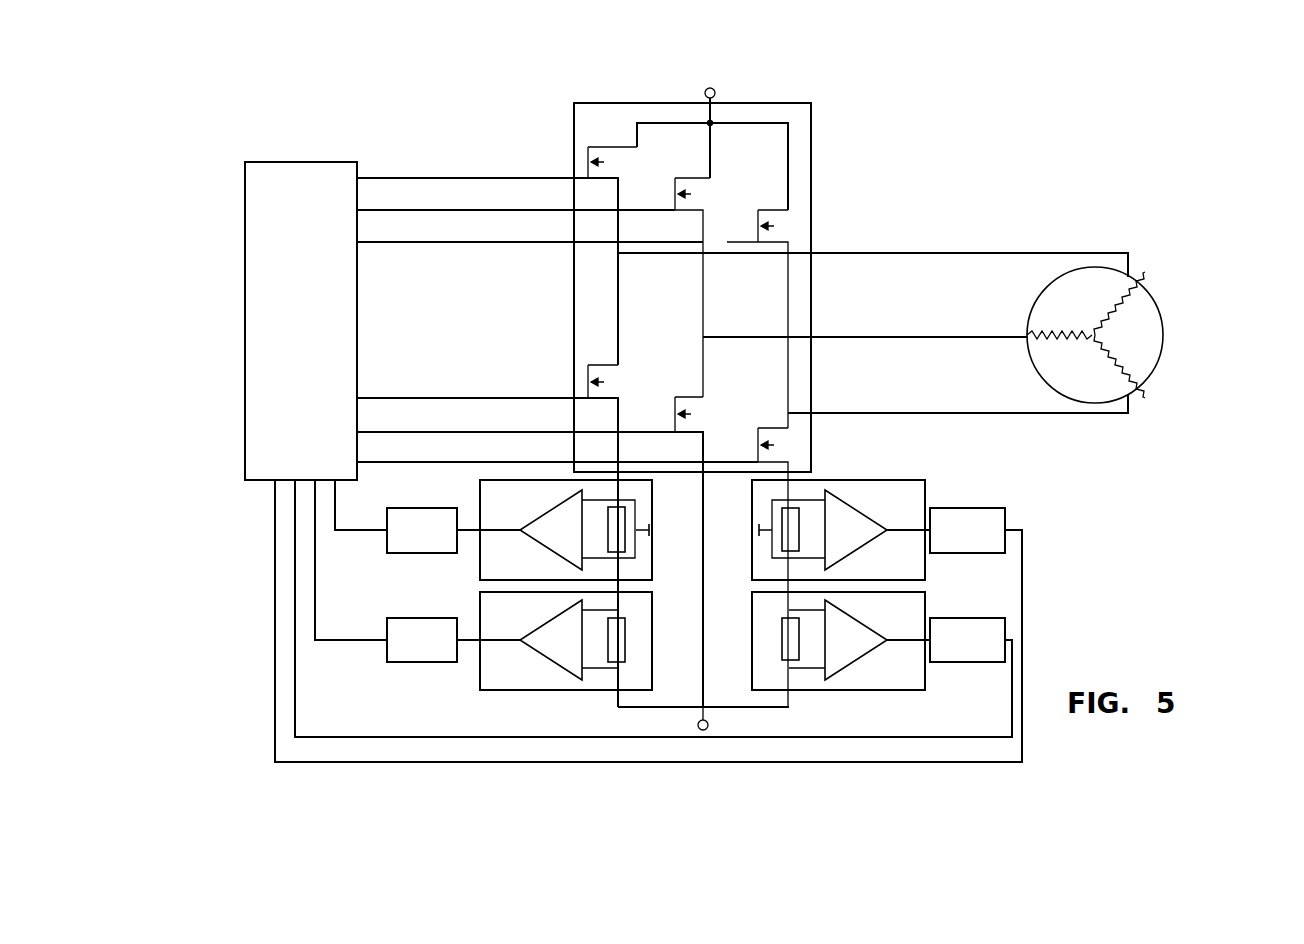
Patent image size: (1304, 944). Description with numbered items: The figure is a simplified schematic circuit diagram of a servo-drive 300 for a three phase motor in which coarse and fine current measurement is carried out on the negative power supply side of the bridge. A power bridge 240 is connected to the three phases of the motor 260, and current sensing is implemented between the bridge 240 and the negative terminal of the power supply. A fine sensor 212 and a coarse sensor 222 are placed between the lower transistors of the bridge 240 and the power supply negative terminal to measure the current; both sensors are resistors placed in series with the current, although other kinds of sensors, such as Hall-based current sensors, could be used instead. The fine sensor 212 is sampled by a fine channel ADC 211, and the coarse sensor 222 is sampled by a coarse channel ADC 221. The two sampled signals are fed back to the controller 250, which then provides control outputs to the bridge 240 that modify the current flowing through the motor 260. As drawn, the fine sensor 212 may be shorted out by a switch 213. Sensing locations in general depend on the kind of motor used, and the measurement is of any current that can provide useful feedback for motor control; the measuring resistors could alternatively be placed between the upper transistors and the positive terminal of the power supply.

The motor control system 300 is at (1140, 172).
The controller 250 is at (273, 167).
The power bridge 240 is at (573, 112).
The motor 260 is at (1155, 290).
The fine channel ADC 211 is at (420, 508).
The fine sensor 212 is at (616, 518).
The switch 213 is at (640, 530).
The coarse channel ADC 221 is at (420, 657).
The coarse sensor 222 is at (615, 642).